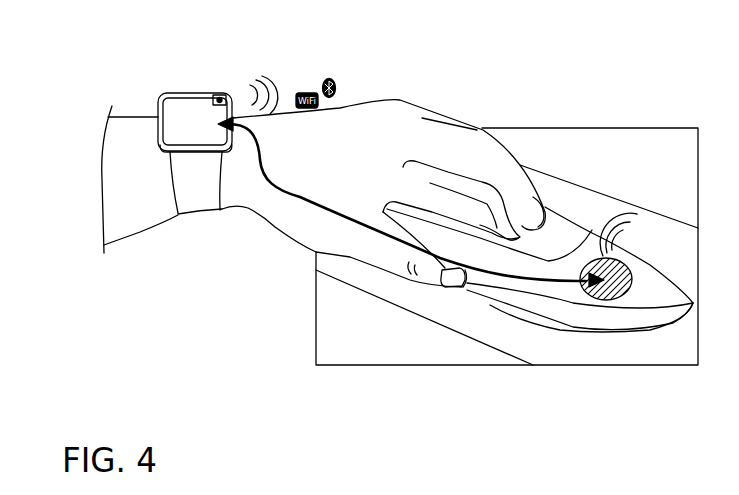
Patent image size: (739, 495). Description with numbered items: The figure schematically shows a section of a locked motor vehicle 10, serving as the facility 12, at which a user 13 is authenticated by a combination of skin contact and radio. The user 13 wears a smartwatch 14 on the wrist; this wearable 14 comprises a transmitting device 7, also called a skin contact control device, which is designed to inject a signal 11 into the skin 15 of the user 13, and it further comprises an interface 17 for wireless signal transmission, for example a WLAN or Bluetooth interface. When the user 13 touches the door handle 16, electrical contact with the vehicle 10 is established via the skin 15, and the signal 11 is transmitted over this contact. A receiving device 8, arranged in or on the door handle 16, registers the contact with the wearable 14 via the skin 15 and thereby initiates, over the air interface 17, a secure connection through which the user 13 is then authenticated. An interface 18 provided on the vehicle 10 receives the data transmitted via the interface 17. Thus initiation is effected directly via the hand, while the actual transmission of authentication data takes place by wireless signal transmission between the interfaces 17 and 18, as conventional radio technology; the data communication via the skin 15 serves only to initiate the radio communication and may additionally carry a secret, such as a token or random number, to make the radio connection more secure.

The transmitting device 7 is at (220, 94).
The receiving device 8 is at (620, 297).
The motor vehicle 10 is at (545, 157).
The signal 11 is at (290, 193).
The facility 12 is at (545, 157).
The user 13 is at (130, 128).
The smartwatch 14 is at (192, 101).
The skin 15 is at (298, 229).
The door handle 16 is at (582, 252).
The interface 17 is at (243, 80).
The interface 18 is at (636, 190).